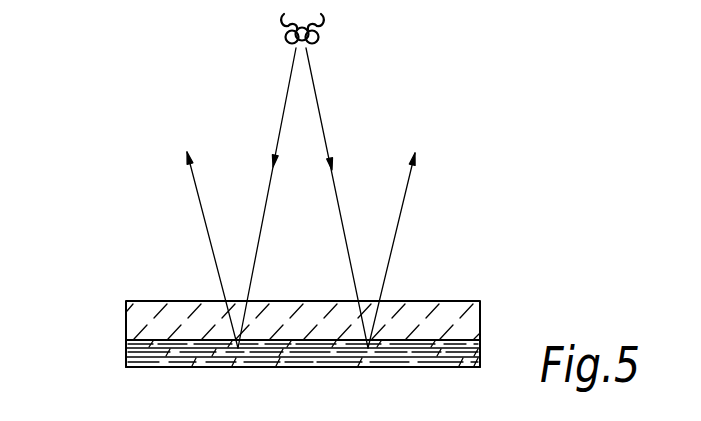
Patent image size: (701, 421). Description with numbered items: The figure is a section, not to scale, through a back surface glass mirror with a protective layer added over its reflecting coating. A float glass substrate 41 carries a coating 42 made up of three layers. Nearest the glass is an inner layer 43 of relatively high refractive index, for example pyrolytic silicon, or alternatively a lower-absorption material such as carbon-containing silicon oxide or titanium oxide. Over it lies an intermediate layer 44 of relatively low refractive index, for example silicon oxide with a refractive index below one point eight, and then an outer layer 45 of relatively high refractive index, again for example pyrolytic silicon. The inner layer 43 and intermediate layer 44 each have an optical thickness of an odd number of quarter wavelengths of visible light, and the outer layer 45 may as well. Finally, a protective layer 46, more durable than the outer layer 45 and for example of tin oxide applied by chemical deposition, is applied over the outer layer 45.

The float glass substrate 41 is at (449, 316).
The coating 42 is at (121, 349).
The inner layer 43 is at (136, 350).
The intermediate layer 44 is at (199, 352).
The outer layer 45 is at (405, 356).
The protective layer 46 is at (463, 362).